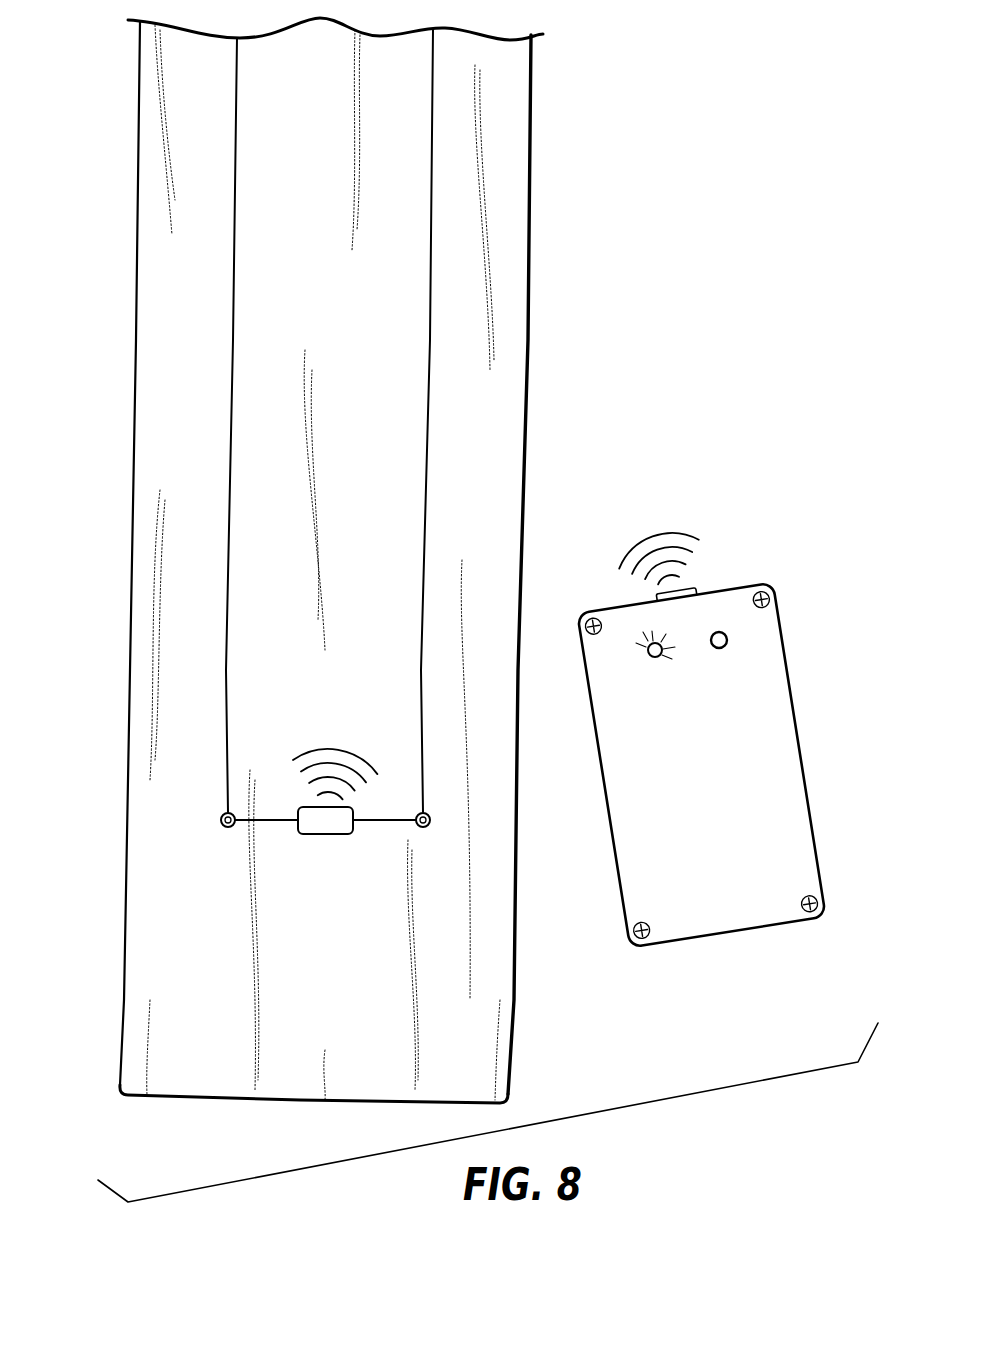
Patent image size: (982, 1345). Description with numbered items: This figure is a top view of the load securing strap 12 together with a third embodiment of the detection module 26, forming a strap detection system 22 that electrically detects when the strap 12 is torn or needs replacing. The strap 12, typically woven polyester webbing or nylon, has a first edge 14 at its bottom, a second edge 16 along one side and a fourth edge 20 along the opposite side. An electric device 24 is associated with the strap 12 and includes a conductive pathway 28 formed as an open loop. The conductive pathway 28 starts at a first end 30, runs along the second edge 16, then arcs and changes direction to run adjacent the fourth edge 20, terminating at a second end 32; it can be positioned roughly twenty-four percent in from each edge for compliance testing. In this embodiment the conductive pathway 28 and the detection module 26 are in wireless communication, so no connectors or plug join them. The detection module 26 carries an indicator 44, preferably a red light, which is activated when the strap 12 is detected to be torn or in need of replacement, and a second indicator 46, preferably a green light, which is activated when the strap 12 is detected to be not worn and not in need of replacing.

The strap 12 is at (498, 214).
The first edge 14 is at (222, 1103).
The second edge 16 is at (180, 514).
The fourth edge 20 is at (530, 452).
The strap detection system 22 is at (80, 135).
The electric device 24 is at (430, 336).
The detection module 26 is at (755, 757).
The conductive pathway 28 is at (233, 275).
The first end 30 is at (226, 827).
The second end 32 is at (425, 827).
The indicator 44 is at (664, 646).
The second indicator 46 is at (727, 648).